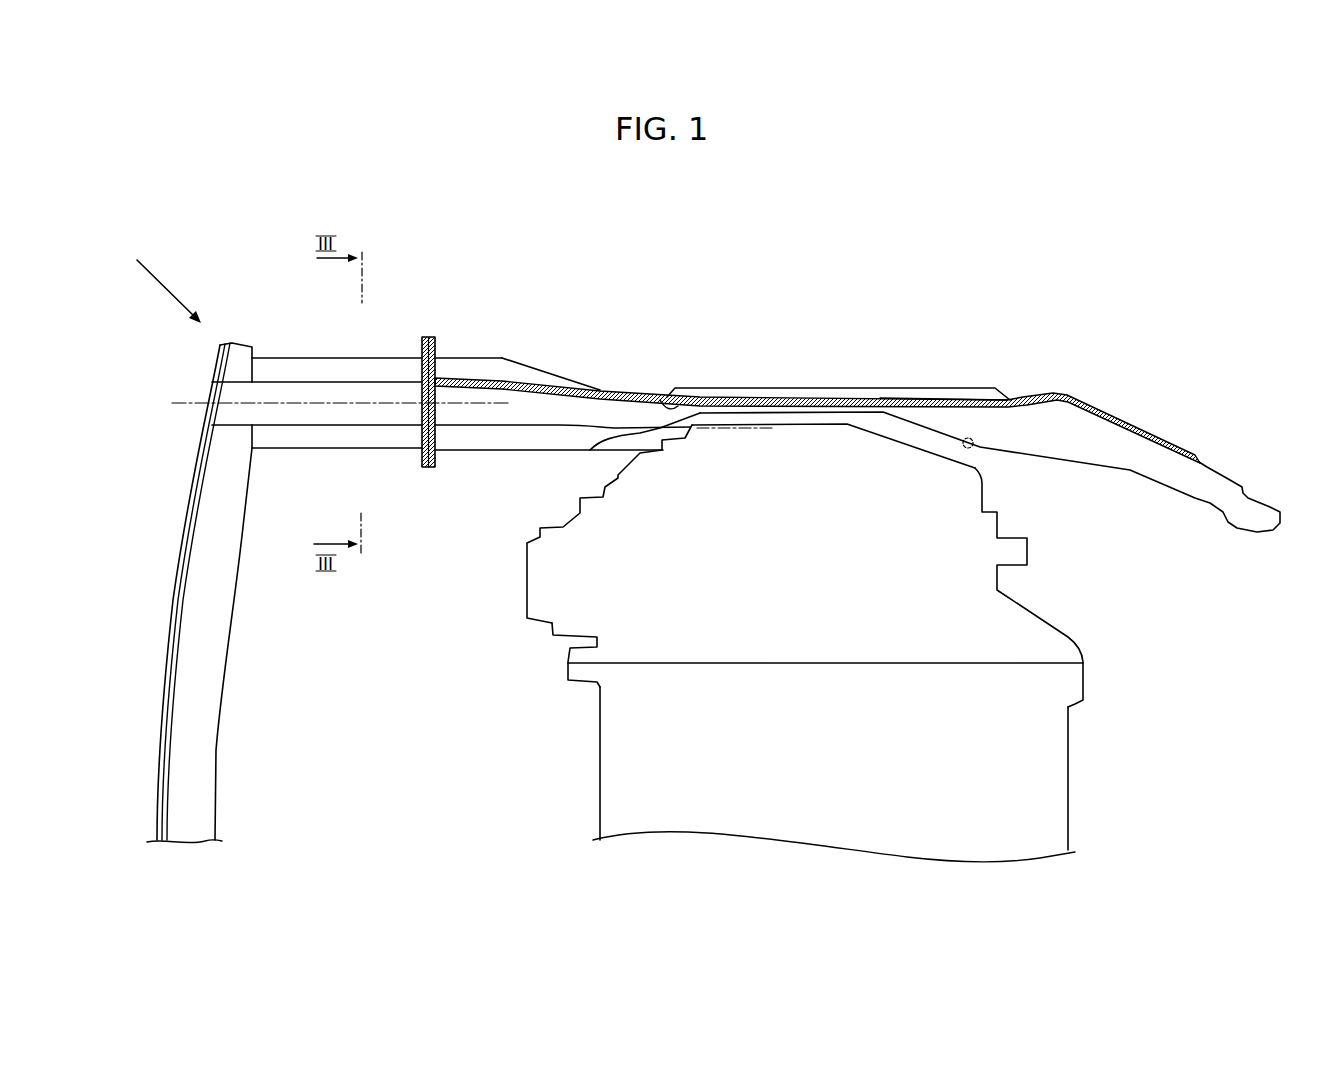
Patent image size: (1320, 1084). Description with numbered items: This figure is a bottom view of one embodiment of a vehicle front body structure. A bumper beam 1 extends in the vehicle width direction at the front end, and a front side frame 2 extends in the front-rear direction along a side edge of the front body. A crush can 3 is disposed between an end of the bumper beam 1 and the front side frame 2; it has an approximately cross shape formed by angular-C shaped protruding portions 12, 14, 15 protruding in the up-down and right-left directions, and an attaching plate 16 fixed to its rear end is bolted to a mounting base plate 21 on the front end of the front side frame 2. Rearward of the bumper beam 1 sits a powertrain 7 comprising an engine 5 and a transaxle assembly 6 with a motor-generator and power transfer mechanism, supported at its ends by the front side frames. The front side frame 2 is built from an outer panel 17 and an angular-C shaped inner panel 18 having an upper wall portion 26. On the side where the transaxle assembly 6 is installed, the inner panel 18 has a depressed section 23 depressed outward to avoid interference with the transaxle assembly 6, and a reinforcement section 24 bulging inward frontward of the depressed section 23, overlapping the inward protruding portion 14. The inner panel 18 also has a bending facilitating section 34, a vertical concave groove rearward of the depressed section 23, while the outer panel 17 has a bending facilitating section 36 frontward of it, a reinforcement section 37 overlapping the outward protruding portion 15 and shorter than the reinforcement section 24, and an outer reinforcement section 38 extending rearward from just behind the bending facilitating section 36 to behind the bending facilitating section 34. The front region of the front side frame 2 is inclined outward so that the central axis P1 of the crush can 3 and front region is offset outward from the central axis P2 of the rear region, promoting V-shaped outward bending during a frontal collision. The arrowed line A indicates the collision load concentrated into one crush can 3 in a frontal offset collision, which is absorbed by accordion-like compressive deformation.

The bumper beam 1 is at (167, 620).
The front side frame 2 is at (857, 424).
The crush can 3 is at (451, 404).
The engine 5 is at (598, 795).
The transaxle assembly 6 is at (527, 590).
The powertrain 7 is at (777, 762).
The protruding portion 12 is at (375, 395).
The protruding portion 14 is at (330, 437).
The protruding portion 15 is at (290, 357).
The attaching plate 16 is at (420, 437).
The outer panel 17 is at (940, 397).
The inner panel 18 is at (555, 436).
The mounting base plate 21 is at (440, 370).
The depressed section 23 is at (877, 427).
The reinforcement section 24 is at (492, 437).
The upper wall portion 26 is at (583, 413).
The bending facilitating section 34 is at (975, 455).
The bending facilitating section 36 is at (663, 400).
The reinforcement section 37 is at (527, 362).
The outer reinforcement section 38 is at (810, 390).
The arrowed line A is at (160, 280).
The central axis P1 is at (232, 398).
The central axis P2 is at (750, 428).